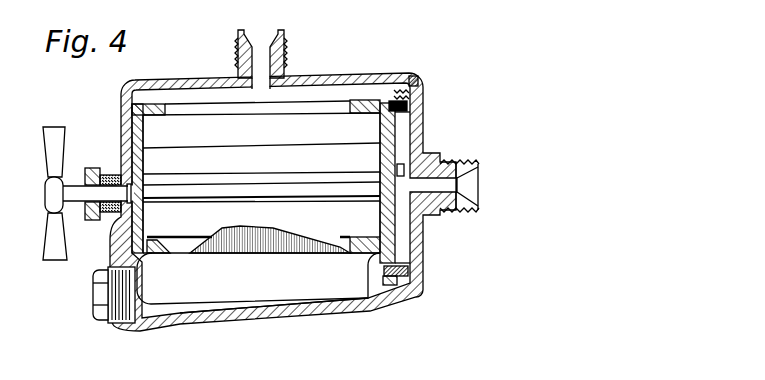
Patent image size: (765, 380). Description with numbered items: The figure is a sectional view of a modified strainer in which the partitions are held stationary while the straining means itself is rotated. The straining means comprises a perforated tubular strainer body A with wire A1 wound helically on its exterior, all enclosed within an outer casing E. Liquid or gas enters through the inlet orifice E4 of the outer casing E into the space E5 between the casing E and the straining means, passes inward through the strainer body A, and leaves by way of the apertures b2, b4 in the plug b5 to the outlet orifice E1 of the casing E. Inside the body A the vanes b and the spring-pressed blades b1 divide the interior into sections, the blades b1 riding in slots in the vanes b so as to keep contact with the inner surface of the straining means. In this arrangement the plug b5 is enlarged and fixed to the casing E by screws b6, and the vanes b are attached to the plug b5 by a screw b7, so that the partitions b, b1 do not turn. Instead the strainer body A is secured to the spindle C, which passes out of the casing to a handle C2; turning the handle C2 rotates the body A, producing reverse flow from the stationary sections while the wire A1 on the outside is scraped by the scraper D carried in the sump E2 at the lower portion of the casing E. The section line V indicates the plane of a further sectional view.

The strainer body A is at (178, 108).
The wire A1 is at (290, 244).
The vanes b is at (173, 160).
The blades b1 is at (213, 128).
The aperture b2 is at (398, 142).
The aperture b4 is at (399, 222).
The plug b5 is at (407, 109).
The screws b6 is at (421, 85).
The screw b7 is at (404, 173).
The spindle C is at (82, 193).
The handle C2 is at (52, 152).
The scraper D is at (280, 291).
The outer casing E is at (296, 84).
The outlet orifice E1 is at (447, 189).
The sump E2 is at (211, 307).
The inlet orifice E4 is at (262, 55).
The space E5 is at (328, 92).
The section line V- V is at (193, 40).